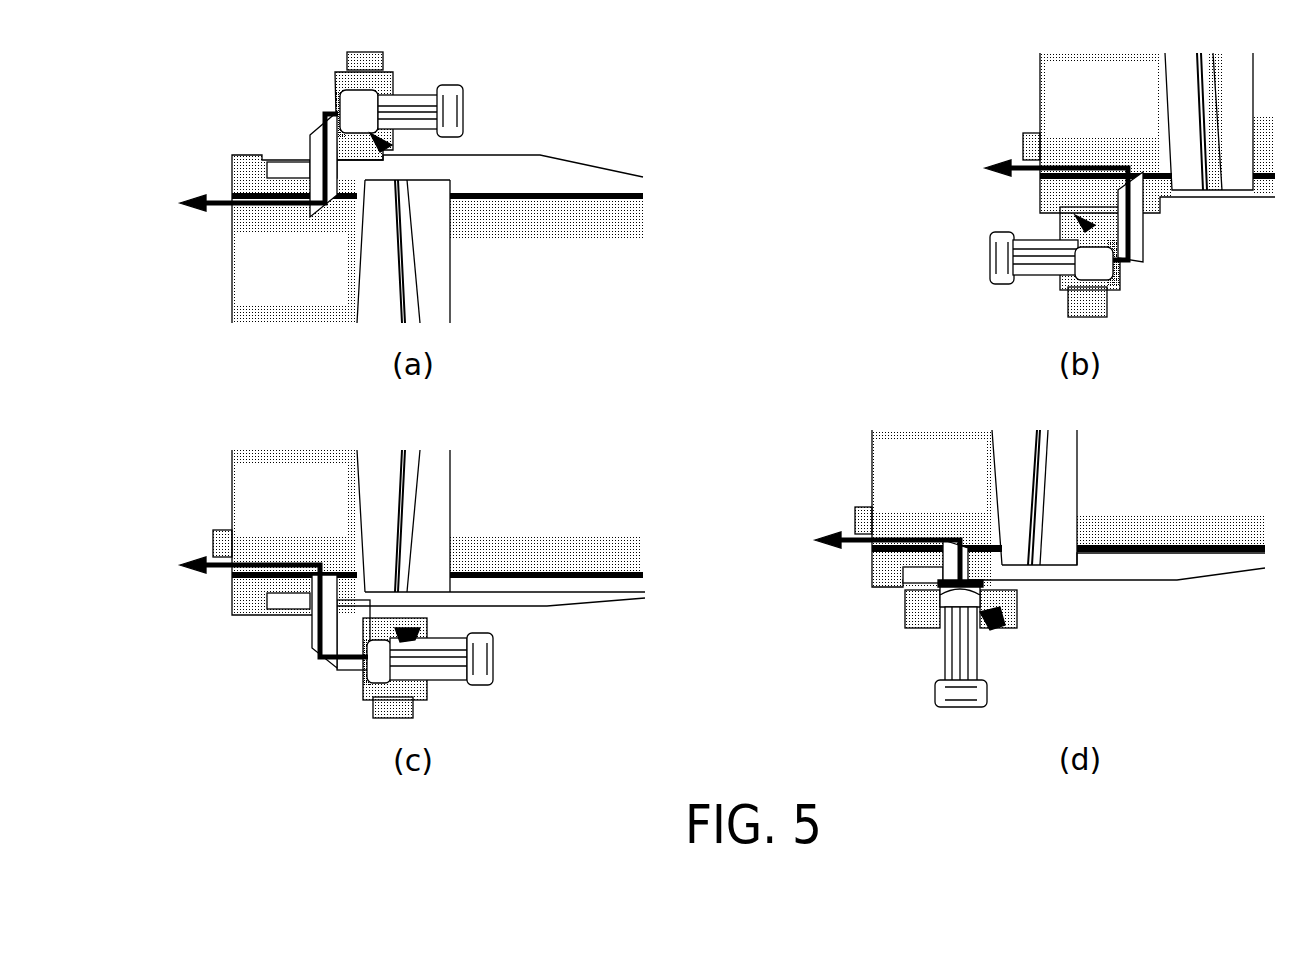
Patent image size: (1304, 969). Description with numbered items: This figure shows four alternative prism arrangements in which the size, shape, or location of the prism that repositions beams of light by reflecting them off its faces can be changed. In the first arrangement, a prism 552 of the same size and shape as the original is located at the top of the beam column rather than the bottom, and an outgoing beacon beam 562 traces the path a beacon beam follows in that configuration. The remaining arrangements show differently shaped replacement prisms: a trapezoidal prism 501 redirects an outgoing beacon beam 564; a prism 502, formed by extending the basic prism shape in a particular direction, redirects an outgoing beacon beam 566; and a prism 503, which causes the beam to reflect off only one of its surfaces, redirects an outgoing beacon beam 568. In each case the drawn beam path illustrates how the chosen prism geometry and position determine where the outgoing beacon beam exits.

The prism 552 is at (316, 132).
The outgoing beacon beam 562 is at (253, 207).
The prism 501 is at (1136, 233).
The outgoing beacon beam 564 is at (1062, 165).
The prism 502 is at (313, 627).
The outgoing beacon beam 566 is at (253, 558).
The prism 503 is at (968, 572).
The outgoing beacon beam 568 is at (895, 537).